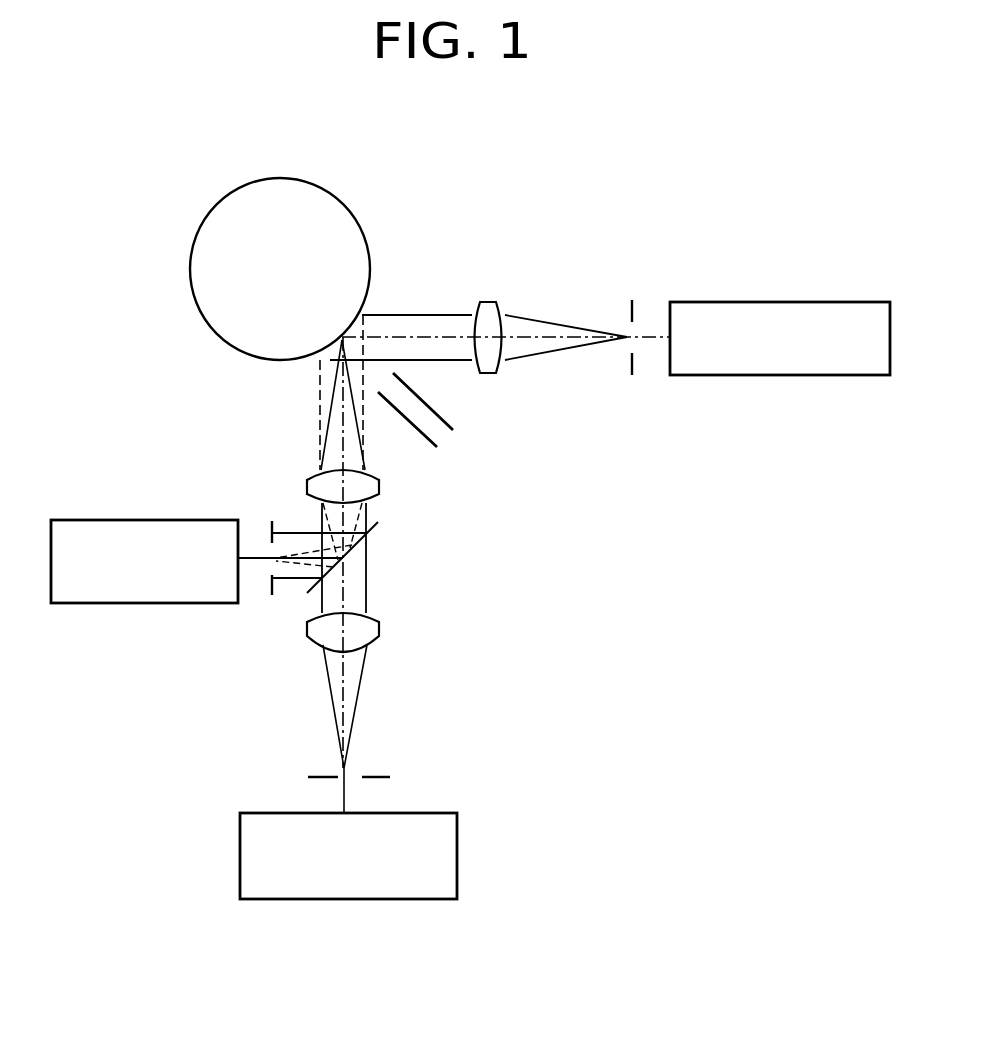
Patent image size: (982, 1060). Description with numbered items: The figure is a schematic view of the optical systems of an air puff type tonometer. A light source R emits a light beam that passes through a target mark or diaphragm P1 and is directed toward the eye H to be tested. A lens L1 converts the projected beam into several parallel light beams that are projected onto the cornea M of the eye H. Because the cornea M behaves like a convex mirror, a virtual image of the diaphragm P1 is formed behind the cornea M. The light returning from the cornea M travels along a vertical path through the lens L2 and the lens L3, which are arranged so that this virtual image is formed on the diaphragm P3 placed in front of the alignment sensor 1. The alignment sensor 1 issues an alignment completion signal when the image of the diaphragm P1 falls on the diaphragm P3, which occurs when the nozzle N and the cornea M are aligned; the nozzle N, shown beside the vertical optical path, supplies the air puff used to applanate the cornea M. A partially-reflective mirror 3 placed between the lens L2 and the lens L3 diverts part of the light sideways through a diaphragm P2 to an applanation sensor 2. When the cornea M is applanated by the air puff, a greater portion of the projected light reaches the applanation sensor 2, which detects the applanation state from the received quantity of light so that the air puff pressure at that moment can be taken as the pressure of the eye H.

The eye H is at (287, 178).
The cornea M is at (360, 332).
The lens L1 is at (478, 303).
The diaphragm P1 is at (637, 307).
The light source R is at (771, 301).
The nozzle N is at (450, 422).
The lens L2 is at (379, 487).
The diaphragm P2 is at (270, 531).
The applanation sensor 2 is at (144, 519).
The partially-reflective mirror 3 is at (373, 528).
The lens L3 is at (379, 629).
The diaphragm P3 is at (390, 777).
The alignment sensor 1 is at (352, 900).